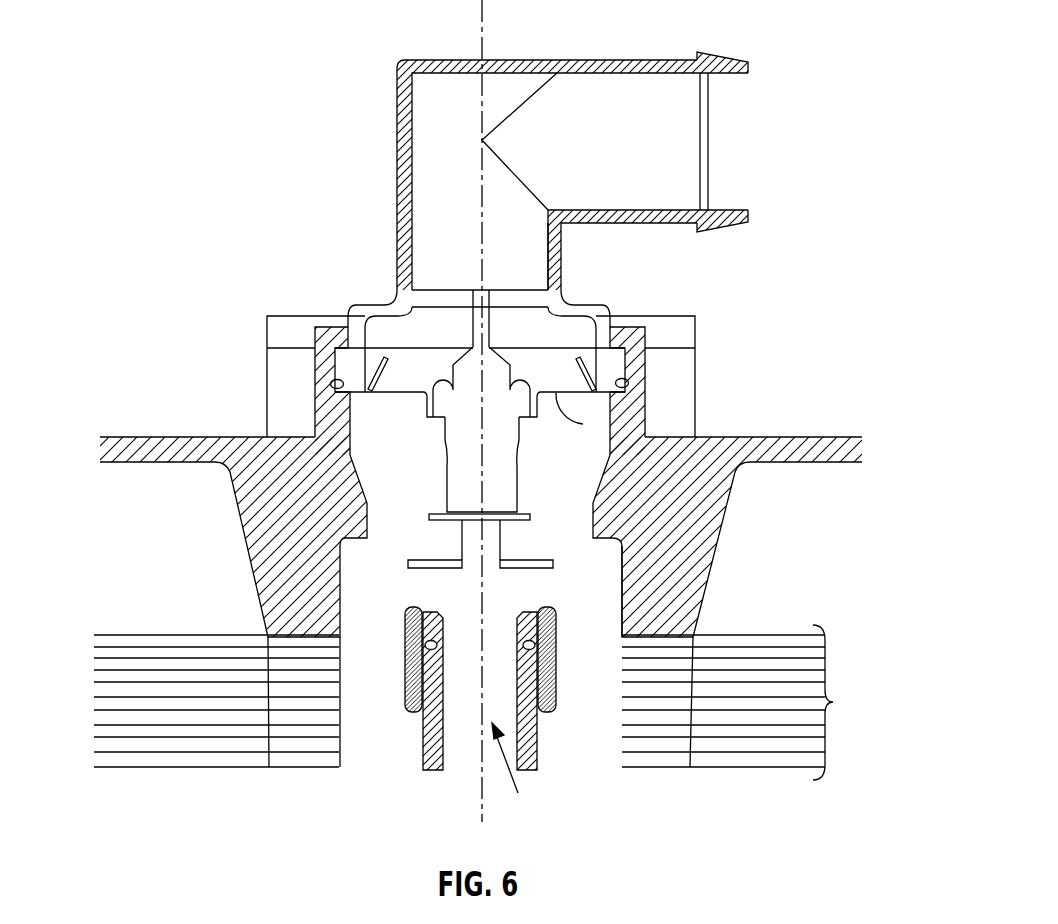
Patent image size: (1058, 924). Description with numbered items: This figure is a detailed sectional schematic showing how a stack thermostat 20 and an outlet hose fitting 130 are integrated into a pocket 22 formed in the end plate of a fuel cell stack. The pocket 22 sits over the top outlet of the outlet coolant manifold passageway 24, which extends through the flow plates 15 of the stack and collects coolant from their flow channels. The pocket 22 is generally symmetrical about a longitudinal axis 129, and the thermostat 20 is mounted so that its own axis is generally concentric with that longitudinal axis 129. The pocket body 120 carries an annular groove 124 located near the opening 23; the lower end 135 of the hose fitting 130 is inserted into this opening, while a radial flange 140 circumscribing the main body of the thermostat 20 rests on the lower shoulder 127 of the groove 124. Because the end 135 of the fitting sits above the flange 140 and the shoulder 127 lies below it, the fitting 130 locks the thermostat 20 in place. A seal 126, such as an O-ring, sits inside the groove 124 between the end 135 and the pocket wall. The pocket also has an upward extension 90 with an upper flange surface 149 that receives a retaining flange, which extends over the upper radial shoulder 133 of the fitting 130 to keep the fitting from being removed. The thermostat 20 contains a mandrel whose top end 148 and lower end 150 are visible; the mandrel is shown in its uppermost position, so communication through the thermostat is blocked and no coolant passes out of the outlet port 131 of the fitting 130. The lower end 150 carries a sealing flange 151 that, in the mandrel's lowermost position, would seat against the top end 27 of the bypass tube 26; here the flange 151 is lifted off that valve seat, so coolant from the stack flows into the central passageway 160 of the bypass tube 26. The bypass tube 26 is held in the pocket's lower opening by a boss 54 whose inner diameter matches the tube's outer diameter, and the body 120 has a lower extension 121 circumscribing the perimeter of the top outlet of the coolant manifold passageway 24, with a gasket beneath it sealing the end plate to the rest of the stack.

The longitudinal axis 129 is at (497, 60).
The hose fitting 130 is at (625, 58).
The outlet port 131 is at (722, 212).
The upper radial shoulder 133 is at (385, 303).
The top end of mandrel 148 is at (491, 305).
The opening 23 is at (612, 328).
The annular groove 124 is at (337, 368).
The upper flange surface 149 is at (280, 316).
The upward extension 90 is at (267, 378).
The seal 126 is at (333, 385).
The lower shoulder 127 is at (345, 394).
The lower end of fitting 135 is at (615, 393).
The radial flange 140 is at (517, 452).
The thermostat 20 is at (582, 427).
The pocket 22 is at (395, 435).
The lower end of mandrel 150 is at (500, 541).
The sealing flange 151 is at (440, 567).
The upper inlet end 27 is at (417, 607).
The boss 54 is at (403, 622).
The body 120 is at (262, 616).
The lower extension 121 is at (262, 625).
The flow plates 15 is at (833, 702).
The bypass tube 26 is at (443, 757).
The central passageway 160 is at (518, 772).
The outlet coolant manifold passageway 24 is at (603, 730).